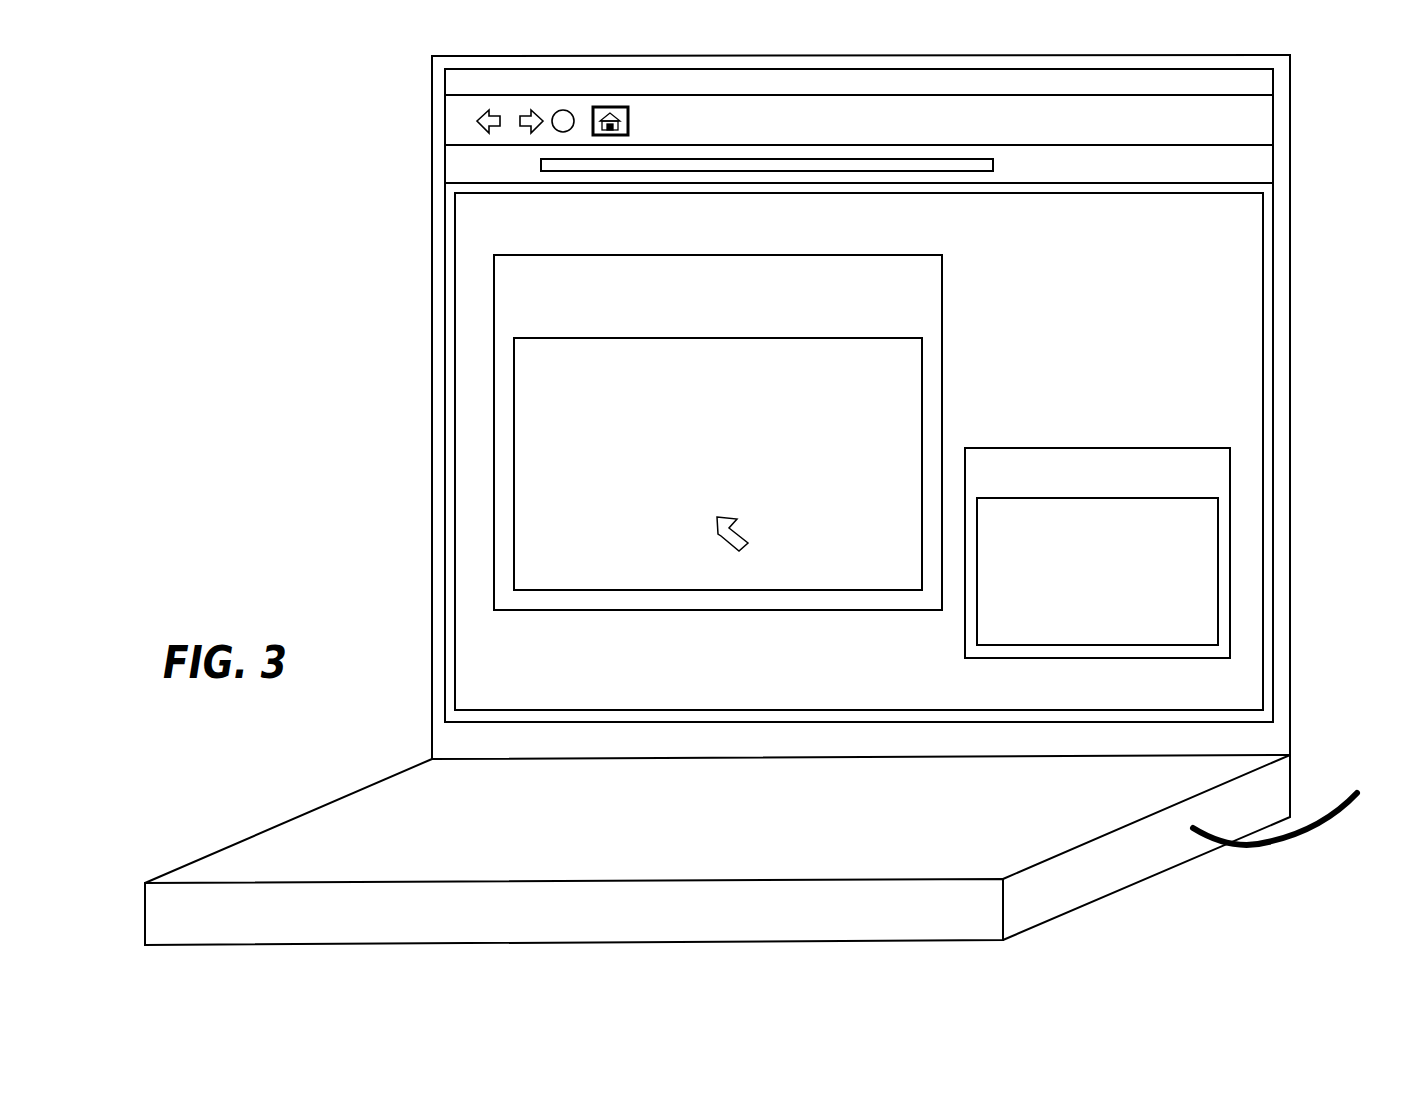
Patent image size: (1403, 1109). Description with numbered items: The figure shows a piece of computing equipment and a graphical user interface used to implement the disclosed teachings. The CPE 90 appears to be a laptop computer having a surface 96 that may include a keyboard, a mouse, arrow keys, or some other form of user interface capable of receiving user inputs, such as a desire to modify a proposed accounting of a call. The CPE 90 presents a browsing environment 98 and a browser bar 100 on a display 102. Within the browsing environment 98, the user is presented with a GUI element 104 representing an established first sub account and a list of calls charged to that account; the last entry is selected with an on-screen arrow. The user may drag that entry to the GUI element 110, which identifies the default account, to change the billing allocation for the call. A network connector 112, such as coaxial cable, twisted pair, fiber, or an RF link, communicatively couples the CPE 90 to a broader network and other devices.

The CPE 90 is at (305, 443).
The surface 96 is at (364, 855).
The browsing environment 98 is at (1294, 183).
The browser bar 100 is at (1293, 67).
The display 102 is at (414, 134).
The GUI element 104 is at (608, 290).
The GUI element 110 is at (1055, 485).
The network connector 112 is at (1357, 828).